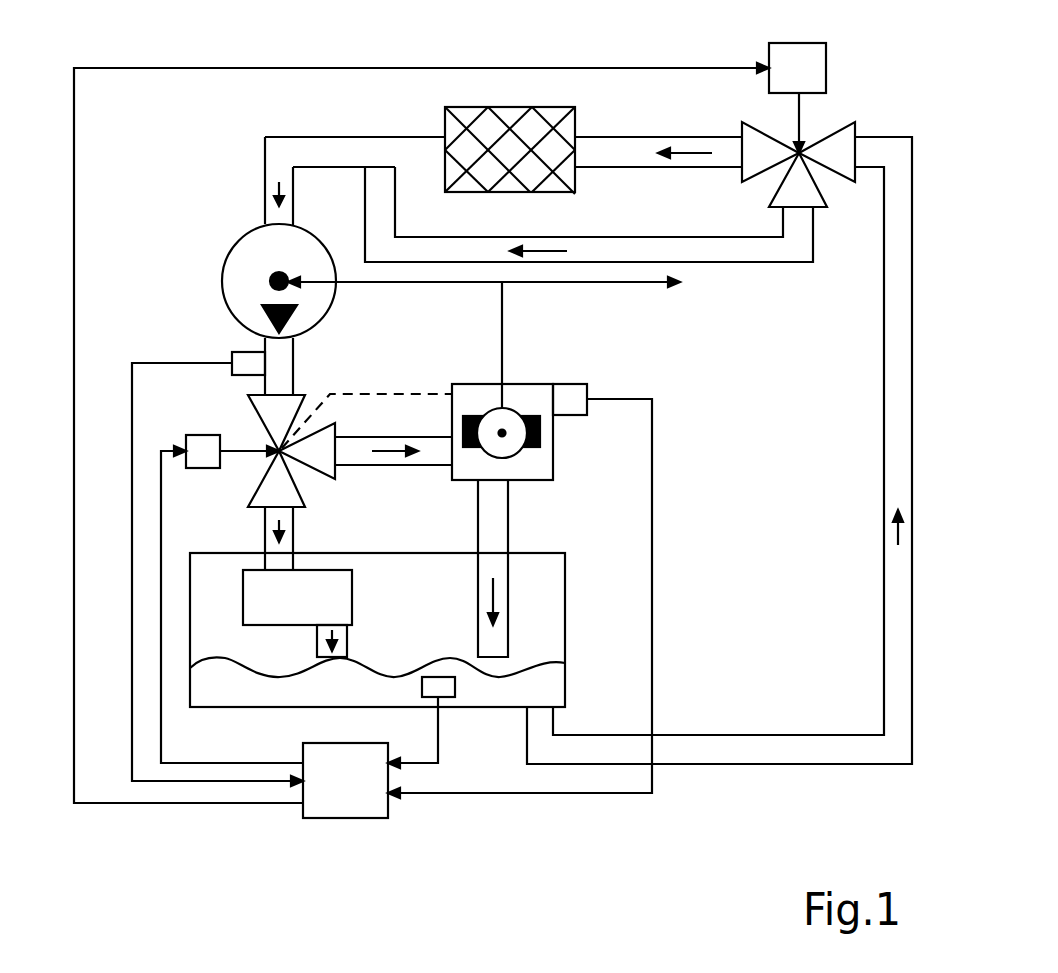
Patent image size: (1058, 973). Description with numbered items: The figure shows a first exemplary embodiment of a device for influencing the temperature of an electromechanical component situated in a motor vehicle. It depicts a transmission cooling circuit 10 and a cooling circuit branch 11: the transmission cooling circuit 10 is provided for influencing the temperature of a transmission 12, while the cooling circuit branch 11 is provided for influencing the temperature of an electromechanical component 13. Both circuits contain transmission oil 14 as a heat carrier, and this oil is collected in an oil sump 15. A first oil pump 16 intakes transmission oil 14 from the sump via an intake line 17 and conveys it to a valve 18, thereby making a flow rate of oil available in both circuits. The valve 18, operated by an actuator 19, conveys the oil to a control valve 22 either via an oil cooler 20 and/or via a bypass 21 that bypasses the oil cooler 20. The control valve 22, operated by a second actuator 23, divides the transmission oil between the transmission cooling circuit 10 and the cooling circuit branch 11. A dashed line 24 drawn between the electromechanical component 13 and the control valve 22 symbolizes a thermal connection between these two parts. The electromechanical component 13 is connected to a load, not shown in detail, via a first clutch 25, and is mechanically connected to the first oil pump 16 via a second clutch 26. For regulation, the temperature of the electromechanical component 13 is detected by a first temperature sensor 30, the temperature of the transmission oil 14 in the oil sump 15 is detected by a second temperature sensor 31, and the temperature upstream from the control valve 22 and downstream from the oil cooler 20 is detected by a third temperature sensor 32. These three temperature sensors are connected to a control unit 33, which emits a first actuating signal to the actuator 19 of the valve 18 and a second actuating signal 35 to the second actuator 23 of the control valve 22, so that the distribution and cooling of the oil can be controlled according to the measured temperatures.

The transmission cooling circuit 10 is at (292, 542).
The cooling circuit branch 11 is at (390, 467).
The transmission 12 is at (285, 611).
The electromechanical component 13 is at (525, 384).
The transmission oil 14 is at (525, 675).
The oil sump 15 is at (557, 553).
The first oil pump 16 is at (232, 243).
The intake line 17 is at (885, 137).
The valve 18 is at (832, 133).
The actuator 19 is at (807, 43).
The oil cooler 20 is at (577, 125).
The bypass 21 is at (572, 237).
The control valve 22 is at (305, 395).
The second actuator 23 is at (203, 434).
The line 24 is at (377, 392).
The first clutch 25 is at (640, 283).
The second clutch 26 is at (385, 283).
The first temperature sensor 30 is at (582, 384).
The second temperature sensor 31 is at (428, 677).
The third temperature sensor 32 is at (230, 350).
The control unit 33 is at (332, 794).
The second actuating signal 35 is at (182, 448).